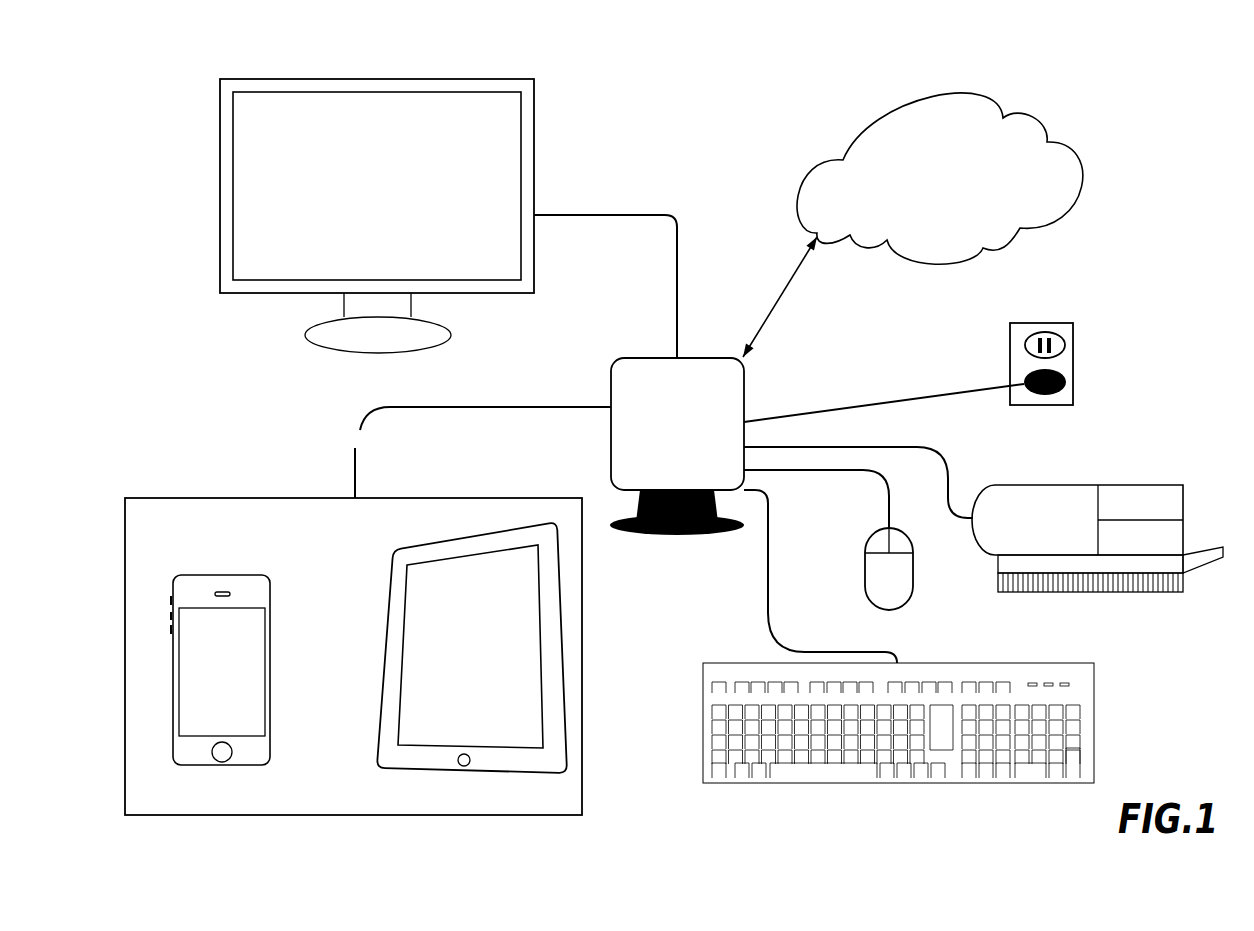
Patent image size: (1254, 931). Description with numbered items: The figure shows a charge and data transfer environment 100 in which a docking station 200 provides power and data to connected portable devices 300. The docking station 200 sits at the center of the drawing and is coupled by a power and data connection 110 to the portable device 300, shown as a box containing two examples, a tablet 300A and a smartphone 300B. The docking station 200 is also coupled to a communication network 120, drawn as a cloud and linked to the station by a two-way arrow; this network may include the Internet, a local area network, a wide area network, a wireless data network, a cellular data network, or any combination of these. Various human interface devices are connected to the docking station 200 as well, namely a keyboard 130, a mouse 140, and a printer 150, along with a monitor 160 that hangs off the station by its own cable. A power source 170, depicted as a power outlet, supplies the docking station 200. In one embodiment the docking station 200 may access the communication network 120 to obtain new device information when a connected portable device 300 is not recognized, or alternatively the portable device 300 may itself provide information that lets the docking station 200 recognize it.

The charge and data transfer environment 100 is at (770, 118).
The power and data connection 110 is at (353, 462).
The communication network 120 is at (953, 221).
The keyboard 130 is at (703, 722).
The mouse 140 is at (865, 568).
The printer 150 is at (1095, 483).
The monitor 160 is at (219, 217).
The power source 170 is at (1075, 363).
The docking station 200 is at (744, 388).
The portable device 300 is at (583, 655).
The tablet 300A is at (385, 628).
The smartphone 300B is at (273, 706).